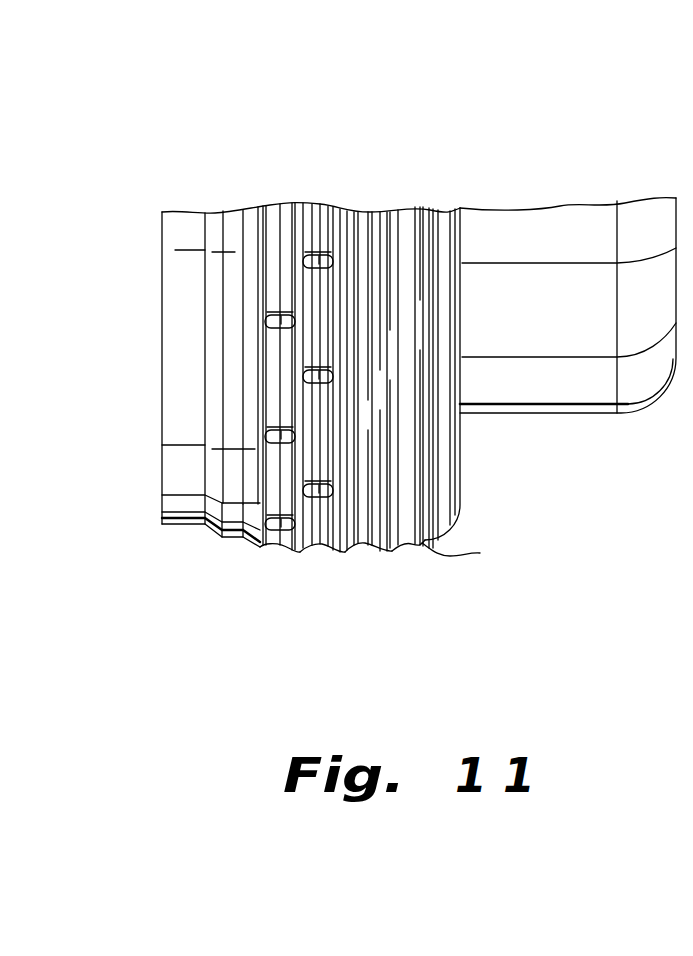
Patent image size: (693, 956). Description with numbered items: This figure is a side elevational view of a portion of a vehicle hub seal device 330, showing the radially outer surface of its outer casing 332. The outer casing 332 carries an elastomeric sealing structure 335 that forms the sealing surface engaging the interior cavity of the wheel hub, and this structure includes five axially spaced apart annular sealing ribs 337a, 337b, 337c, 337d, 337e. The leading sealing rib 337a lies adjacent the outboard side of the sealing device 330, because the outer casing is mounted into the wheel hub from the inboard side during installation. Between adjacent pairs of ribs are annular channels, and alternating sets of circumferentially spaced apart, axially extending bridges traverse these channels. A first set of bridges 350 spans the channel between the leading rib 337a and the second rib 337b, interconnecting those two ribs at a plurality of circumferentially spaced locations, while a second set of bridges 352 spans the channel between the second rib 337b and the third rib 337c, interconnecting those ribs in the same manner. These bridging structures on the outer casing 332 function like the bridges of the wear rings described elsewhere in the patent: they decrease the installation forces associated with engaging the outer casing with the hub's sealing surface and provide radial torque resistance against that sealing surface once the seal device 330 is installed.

The hub seal device 330 is at (391, 377).
The elastomeric sealing structure 335 is at (268, 215).
The second set of axially extending bridges 352 is at (328, 252).
The outer casing 332 is at (567, 388).
The first set of axially extending bridges 350 is at (220, 530).
The leading annular sealing rib 337a is at (263, 553).
The second annular sealing rib 337b is at (300, 553).
The third annular sealing rib 337c is at (340, 550).
The fourth annular sealing rib 337d is at (385, 550).
The fifth annular sealing rib 337e is at (478, 555).